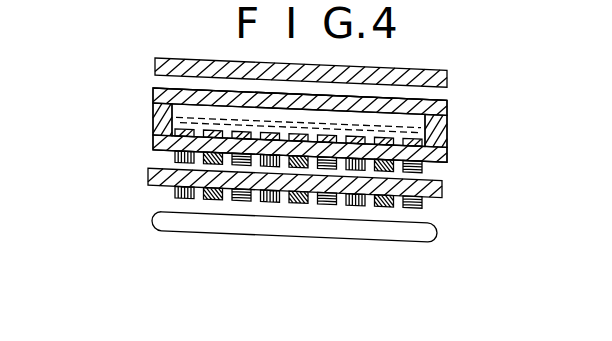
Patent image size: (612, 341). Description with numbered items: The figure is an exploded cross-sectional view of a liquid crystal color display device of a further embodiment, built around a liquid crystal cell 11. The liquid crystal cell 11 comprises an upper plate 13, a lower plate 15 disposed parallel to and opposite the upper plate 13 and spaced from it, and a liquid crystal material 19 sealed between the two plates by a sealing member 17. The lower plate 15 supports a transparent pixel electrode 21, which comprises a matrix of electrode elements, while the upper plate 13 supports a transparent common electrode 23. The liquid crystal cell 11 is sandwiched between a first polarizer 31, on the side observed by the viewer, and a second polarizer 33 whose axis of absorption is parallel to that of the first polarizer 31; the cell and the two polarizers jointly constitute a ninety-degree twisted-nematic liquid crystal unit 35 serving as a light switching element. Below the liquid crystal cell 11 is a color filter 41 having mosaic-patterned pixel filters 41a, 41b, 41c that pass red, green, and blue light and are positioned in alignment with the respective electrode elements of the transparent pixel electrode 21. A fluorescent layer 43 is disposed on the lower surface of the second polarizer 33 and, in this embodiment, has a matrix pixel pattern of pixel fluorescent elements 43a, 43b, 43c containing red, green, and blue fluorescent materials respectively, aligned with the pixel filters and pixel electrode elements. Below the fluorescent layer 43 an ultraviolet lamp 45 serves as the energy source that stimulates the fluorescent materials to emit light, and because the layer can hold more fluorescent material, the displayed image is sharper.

The liquid crystal cell 11 is at (499, 93).
The upper plate 13 is at (448, 106).
The lower plate 15 is at (448, 152).
The sealing member 17 is at (160, 106).
The liquid crystal material 19 is at (448, 127).
The transparent pixel electrode 21 is at (173, 130).
The transparent common electrode 23 is at (180, 92).
The first polarizer 31 is at (448, 79).
The second polarizer 33 is at (443, 190).
The 90°-TN liquid crystal unit 35 is at (545, 65).
The color filter 41 is at (93, 147).
The pixel filter 41a is at (176, 153).
The pixel filter 41b is at (203, 163).
The pixel filter 41c is at (232, 165).
The fluorescent layer 43 is at (92, 214).
The pixel fluorescent element 43a is at (178, 197).
The pixel fluorescent element 43b is at (215, 201).
The pixel fluorescent element 43c is at (245, 203).
The ultraviolet lamp 45 is at (437, 233).